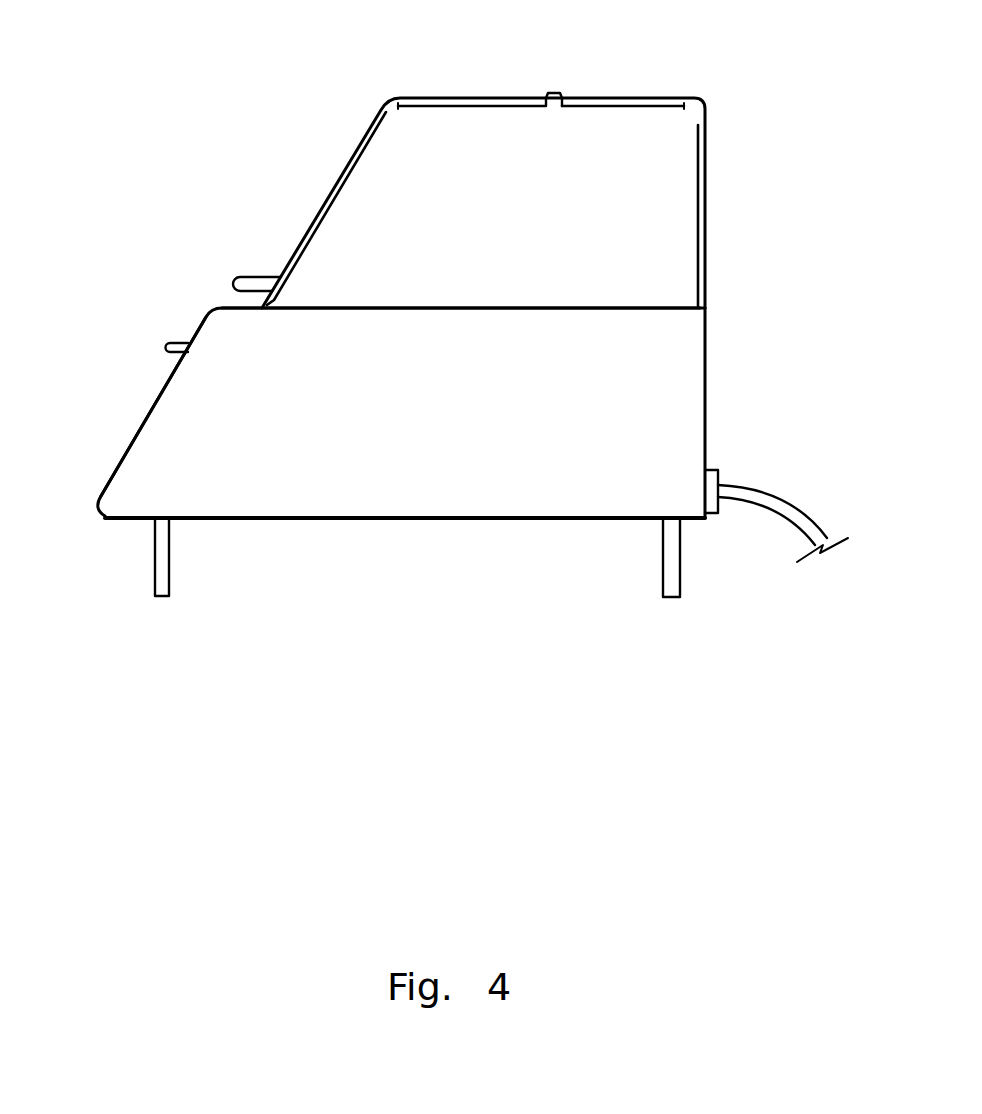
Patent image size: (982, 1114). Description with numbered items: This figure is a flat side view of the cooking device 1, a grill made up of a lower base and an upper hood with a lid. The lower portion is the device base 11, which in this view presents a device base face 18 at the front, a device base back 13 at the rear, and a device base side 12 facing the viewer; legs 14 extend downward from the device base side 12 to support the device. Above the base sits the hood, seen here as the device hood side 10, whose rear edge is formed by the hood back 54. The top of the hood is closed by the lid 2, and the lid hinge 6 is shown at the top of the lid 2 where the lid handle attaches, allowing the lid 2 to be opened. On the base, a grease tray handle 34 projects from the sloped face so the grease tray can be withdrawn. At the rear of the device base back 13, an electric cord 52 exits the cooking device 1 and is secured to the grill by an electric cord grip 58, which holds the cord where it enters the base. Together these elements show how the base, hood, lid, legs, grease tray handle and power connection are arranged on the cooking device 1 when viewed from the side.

The cooking device 1 is at (456, 542).
The lid 2 is at (343, 163).
The lid hinge 6 is at (558, 90).
The device hood side 10 is at (655, 163).
The device base 11 is at (227, 305).
The device base side 12 is at (338, 445).
The device base back 13 is at (707, 393).
The legs 14 is at (250, 280).
The device base face 18 is at (130, 438).
The grease tray handle 34 is at (170, 345).
The electric cord 52 is at (765, 483).
The hood back 54 is at (710, 207).
The electric cord grip 58 is at (715, 472).